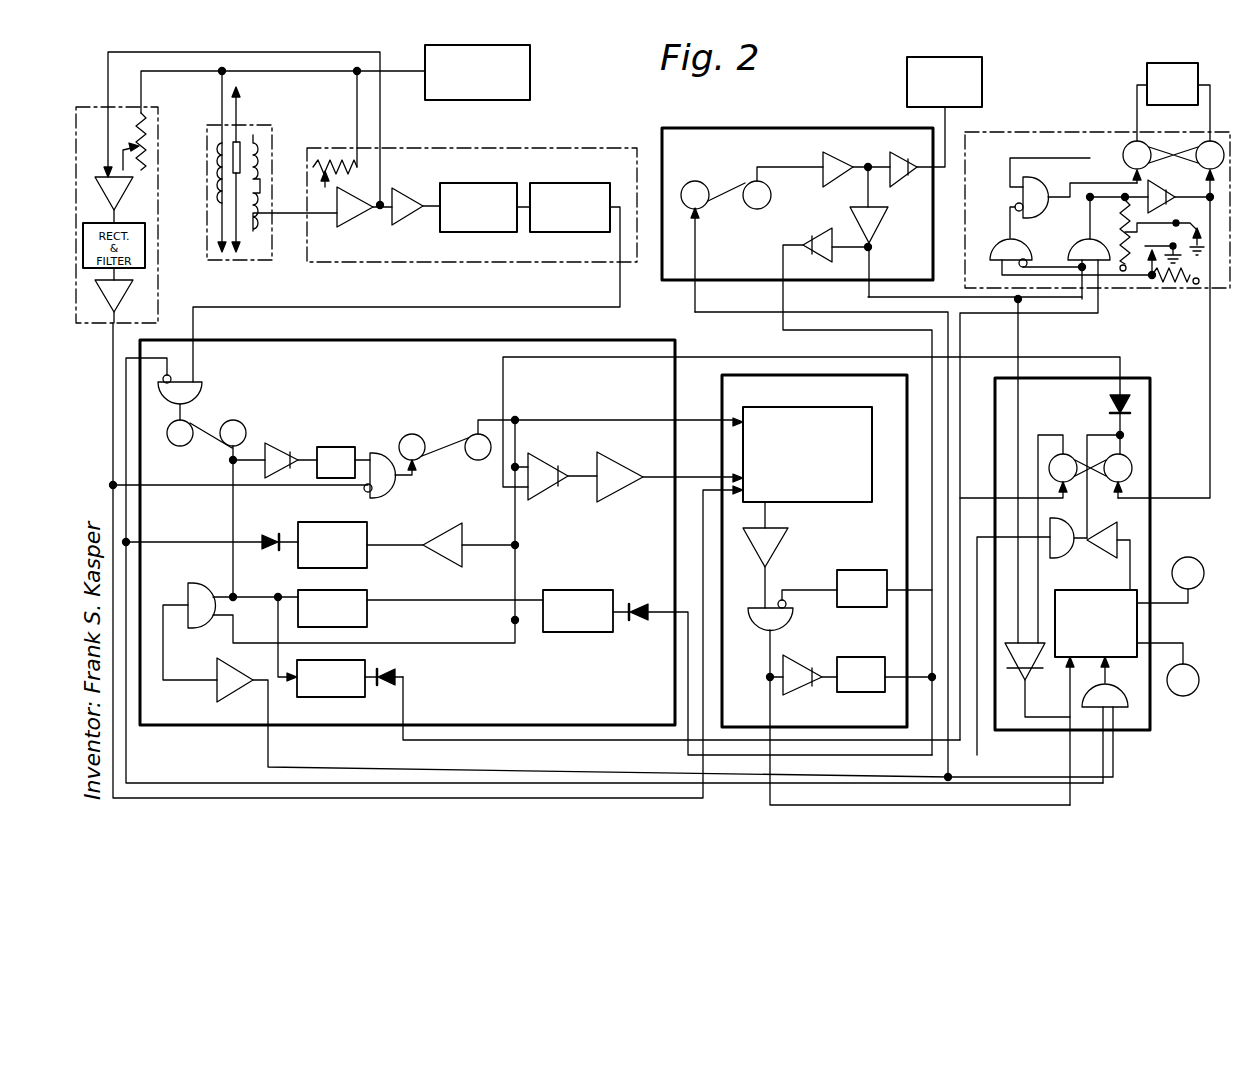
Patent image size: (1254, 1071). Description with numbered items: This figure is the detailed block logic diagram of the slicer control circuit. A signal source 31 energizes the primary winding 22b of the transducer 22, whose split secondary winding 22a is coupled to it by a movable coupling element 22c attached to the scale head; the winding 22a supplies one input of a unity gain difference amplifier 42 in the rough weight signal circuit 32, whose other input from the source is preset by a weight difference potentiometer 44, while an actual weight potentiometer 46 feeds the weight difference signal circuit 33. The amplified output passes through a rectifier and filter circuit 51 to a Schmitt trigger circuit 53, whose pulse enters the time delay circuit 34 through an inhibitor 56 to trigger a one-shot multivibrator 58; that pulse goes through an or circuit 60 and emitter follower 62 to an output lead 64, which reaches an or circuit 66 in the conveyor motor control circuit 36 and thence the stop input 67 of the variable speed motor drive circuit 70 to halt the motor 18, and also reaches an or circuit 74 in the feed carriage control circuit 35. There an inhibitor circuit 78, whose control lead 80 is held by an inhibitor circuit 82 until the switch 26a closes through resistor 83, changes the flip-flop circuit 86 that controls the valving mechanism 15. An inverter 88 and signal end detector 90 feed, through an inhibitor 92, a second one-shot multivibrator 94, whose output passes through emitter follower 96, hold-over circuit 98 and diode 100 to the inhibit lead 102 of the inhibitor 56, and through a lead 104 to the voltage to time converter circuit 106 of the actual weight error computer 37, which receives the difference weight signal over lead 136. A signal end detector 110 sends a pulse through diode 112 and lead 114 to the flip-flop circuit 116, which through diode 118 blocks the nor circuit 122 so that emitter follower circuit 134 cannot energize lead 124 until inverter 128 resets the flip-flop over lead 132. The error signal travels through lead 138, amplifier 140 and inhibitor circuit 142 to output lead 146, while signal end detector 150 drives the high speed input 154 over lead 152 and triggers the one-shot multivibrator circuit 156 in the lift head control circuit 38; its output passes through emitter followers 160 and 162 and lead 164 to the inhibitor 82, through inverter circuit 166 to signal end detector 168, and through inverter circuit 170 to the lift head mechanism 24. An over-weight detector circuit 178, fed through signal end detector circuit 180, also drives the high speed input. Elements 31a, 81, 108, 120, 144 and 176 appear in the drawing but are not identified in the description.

The valving mechanism 15 is at (1178, 62).
The motor 18 is at (1190, 668).
The transducer 22 is at (246, 262).
The split secondary winding 22a is at (258, 137).
The primary winding 22b is at (216, 158).
The movable coupling element 22c is at (240, 120).
The lift head mechanism 24 is at (975, 58).
The glass reed switch 26a is at (1192, 216).
The signal source 31 is at (532, 63).
The output lead 31a is at (290, 213).
The rough weight signal circuit 32 is at (560, 150).
The weight difference signal circuit 33 is at (160, 305).
The time delay circuit 34 is at (618, 340).
The feed carriage control circuit 35 is at (1055, 132).
The conveyor motor control circuit 36 is at (990, 414).
The actual weight error computer 37 is at (722, 392).
The lift head control circuit 38 is at (826, 128).
The unity gain difference amplifier 42 is at (352, 218).
The weight difference potentiometer 44 is at (338, 172).
The actual weight potentiometer 46 is at (129, 141).
The rectifier and filter circuit 51 is at (455, 182).
The Schmitt trigger circuit 53 is at (553, 182).
The inhibitor 56 is at (200, 380).
The one-shot multivibrator 58 is at (205, 437).
The or circuit 60 is at (205, 572).
The emitter follower 62 is at (225, 660).
The output lead 64 is at (268, 750).
The or circuit 66 is at (1122, 700).
The stop input 67 is at (1106, 674).
The variable speed motor drive circuit 70 is at (1115, 590).
The or circuit 74 is at (1070, 250).
The inhibitor circuit 78 is at (1044, 165).
The control lead 80 is at (1012, 209).
The potentiometer 81 is at (1185, 287).
The inhibitor circuit 82 is at (998, 250).
The resistor 83 is at (1163, 285).
The flip-flop circuit 86 is at (1160, 158).
The inverter 88 is at (282, 443).
The signal end detector 90 is at (338, 446).
The inhibitor 92 is at (380, 452).
The one-shot multivibrator 94 is at (448, 442).
The emitter follower 96 is at (450, 528).
The hold-over circuit 98 is at (338, 514).
The diode 100 is at (270, 538).
The inhibit lead 102 is at (178, 362).
The lead 104 is at (645, 420).
The voltage to time converter circuit 106 is at (780, 407).
The amplifier 108 is at (1028, 685).
The signal end detector 110 is at (352, 660).
The diode 112 is at (385, 688).
The lead 114 is at (455, 740).
The flip-flop circuit 116 is at (1100, 480).
The diode 118 is at (1105, 400).
The conductor 120 is at (982, 357).
The nor circuit 122 is at (552, 443).
The lead 124 is at (700, 478).
The inverter 128 is at (1152, 182).
The lead 132 is at (1210, 370).
The emitter follower circuit 134 is at (628, 445).
The lead 136 is at (113, 745).
The lead 138 is at (765, 516).
The amplifier 140 is at (778, 540).
The inhibitor circuit 142 is at (790, 622).
The amplifier 144 is at (796, 688).
The output lead 146 is at (770, 712).
The signal end detector 150 is at (882, 657).
The lead 152 is at (915, 680).
The high speed input 154 is at (1068, 692).
The one-shot multivibrator circuit 156 is at (735, 186).
The emitter follower 160 is at (816, 160).
The emitter follower 162 is at (872, 225).
The lead 164 is at (1020, 301).
The inverter circuit 166 is at (815, 226).
The signal end detector 168 is at (870, 570).
The inverter circuit 170 is at (888, 150).
The AND gate 176 is at (1060, 560).
The over-weight detector circuit 178 is at (600, 576).
The signal end detector circuit 180 is at (360, 590).